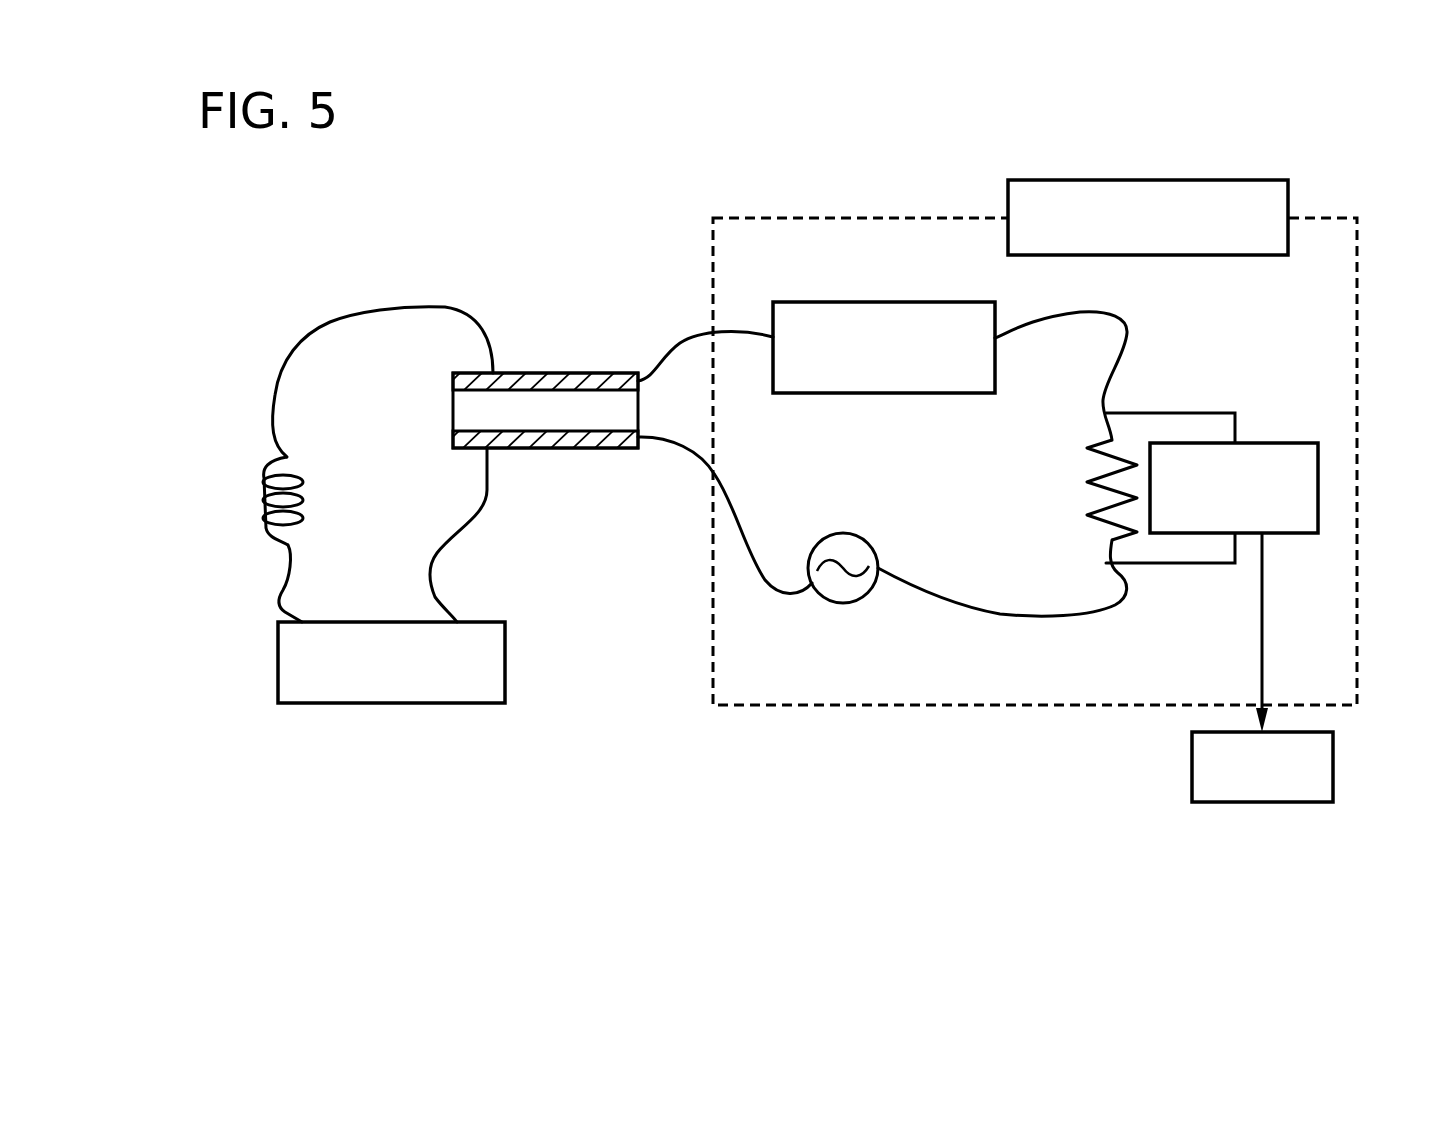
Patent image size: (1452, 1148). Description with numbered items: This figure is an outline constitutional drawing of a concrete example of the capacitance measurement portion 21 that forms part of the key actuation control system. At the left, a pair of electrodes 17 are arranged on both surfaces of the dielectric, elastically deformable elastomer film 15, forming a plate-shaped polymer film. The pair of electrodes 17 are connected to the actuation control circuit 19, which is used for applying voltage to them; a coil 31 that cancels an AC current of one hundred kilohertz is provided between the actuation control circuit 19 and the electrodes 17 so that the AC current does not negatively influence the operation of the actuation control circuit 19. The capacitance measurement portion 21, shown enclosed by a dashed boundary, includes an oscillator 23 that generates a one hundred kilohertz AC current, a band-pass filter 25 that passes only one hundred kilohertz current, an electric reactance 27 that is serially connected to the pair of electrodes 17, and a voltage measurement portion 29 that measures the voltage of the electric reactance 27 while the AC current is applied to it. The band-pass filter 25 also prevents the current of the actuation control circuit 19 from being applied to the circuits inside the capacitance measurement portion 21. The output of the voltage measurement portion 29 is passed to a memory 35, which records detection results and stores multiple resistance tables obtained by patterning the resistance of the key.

The elastomer film 15 is at (452, 407).
The electrodes 17 is at (568, 372).
The actuation control circuit 19 is at (388, 705).
The capacitance measurement portion 21 is at (1228, 180).
The oscillator 23 is at (843, 603).
The band-pass filter 25 is at (918, 302).
The electric reactance 27 is at (1087, 482).
The voltage measurement portion 29 is at (1268, 443).
The coil 31 is at (262, 512).
The memory 35 is at (1262, 805).